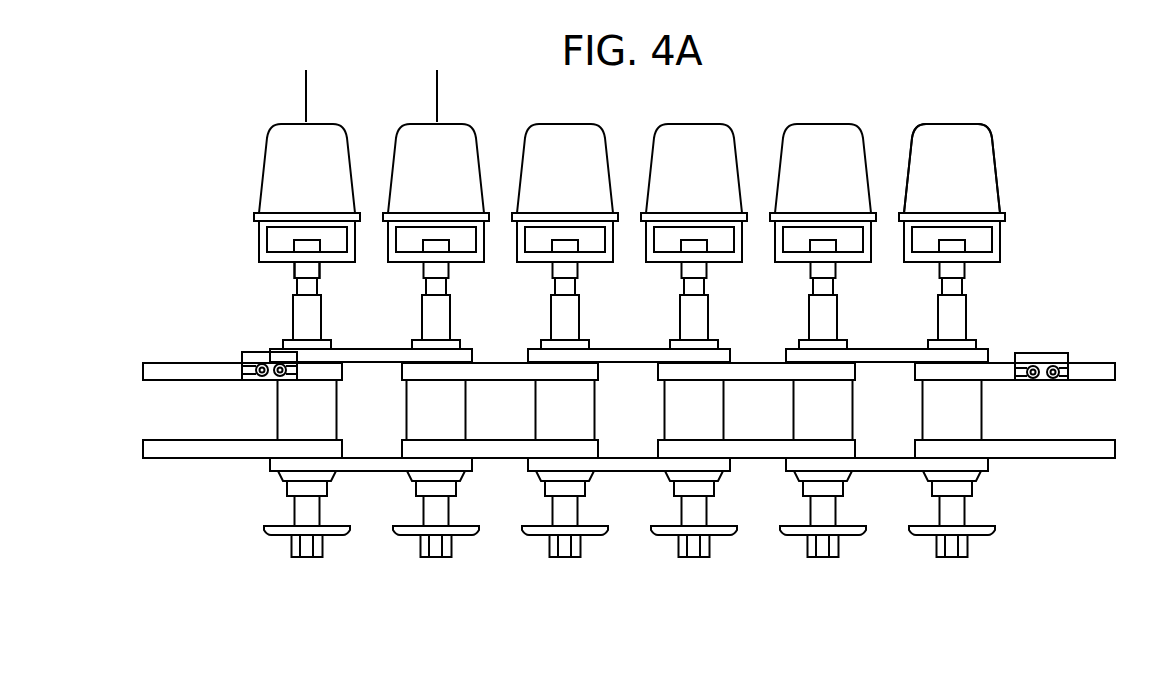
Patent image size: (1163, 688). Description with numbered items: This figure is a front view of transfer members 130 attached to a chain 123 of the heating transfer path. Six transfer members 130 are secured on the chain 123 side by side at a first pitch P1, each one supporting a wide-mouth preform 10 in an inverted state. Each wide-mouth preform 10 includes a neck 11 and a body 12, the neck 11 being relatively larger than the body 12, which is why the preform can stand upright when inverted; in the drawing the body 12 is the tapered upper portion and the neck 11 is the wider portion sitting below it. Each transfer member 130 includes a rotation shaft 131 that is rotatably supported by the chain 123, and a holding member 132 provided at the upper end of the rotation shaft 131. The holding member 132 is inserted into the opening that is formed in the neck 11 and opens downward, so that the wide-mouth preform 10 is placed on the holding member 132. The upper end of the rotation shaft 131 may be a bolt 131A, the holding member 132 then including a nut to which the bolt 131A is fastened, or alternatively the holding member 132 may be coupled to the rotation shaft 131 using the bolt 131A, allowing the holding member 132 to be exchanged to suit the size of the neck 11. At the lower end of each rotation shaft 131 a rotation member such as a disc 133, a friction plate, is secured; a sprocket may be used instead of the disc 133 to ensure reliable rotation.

The wide-mouth preform 10 is at (998, 175).
The neck 11 is at (260, 226).
The body 12 is at (984, 146).
The chain 123 is at (990, 362).
The transfer member 130 is at (283, 322).
The rotation shaft 131 is at (295, 300).
The bolt 131A is at (333, 252).
The holding member 132 is at (290, 212).
The disc (friction plate) 133 is at (980, 534).
The first pitch P1 is at (306, 78).